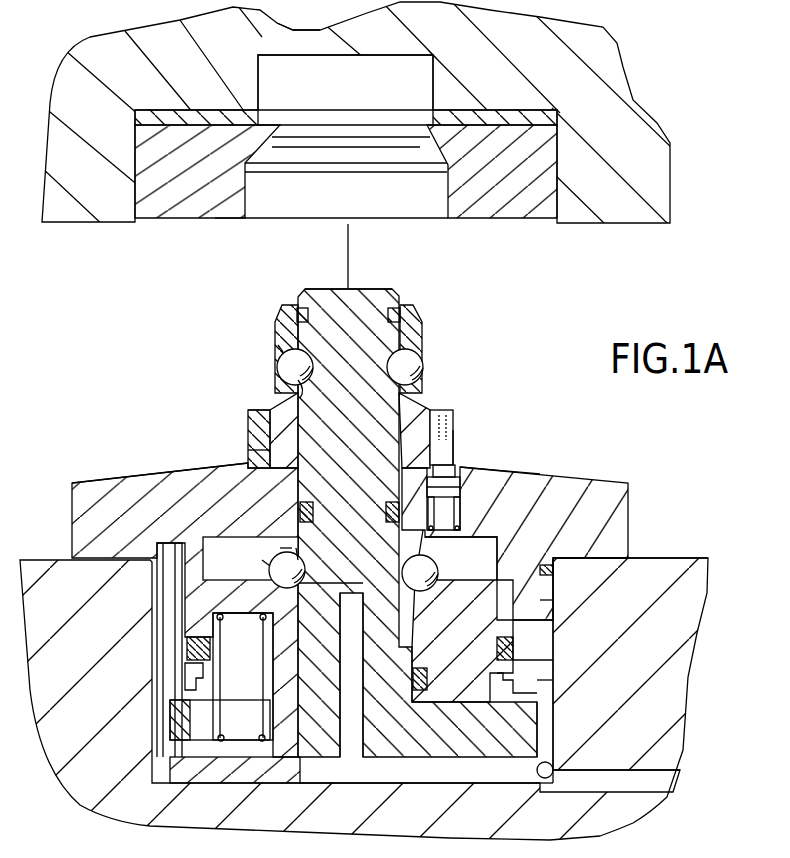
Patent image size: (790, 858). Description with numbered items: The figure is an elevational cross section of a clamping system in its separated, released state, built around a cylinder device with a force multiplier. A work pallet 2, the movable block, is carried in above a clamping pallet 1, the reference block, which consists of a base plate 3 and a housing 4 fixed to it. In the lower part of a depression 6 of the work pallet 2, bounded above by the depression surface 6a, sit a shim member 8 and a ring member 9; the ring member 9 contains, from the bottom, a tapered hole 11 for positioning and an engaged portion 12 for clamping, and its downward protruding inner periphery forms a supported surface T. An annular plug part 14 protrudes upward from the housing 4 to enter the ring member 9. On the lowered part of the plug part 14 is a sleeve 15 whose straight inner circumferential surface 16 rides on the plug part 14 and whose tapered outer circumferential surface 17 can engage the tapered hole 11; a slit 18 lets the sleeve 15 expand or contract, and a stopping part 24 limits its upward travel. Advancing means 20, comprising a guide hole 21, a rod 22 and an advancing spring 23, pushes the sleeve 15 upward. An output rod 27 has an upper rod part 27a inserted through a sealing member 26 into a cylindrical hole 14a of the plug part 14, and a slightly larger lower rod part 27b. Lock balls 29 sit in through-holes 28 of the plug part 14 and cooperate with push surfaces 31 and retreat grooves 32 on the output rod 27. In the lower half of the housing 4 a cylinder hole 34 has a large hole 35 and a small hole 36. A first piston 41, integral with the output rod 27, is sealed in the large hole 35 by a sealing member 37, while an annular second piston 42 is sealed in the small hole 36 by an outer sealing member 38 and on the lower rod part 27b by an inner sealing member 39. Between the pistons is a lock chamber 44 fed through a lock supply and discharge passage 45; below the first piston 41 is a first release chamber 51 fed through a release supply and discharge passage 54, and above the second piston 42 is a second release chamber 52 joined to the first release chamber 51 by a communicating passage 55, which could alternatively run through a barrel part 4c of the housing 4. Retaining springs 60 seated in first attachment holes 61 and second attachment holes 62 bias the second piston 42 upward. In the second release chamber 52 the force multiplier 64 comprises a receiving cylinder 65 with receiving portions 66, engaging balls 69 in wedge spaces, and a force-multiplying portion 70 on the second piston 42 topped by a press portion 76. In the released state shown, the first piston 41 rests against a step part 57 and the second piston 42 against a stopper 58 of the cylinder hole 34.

The clamping pallet 1 is at (686, 564).
The work pallet 2 is at (618, 72).
The base plate 3 is at (687, 697).
The housing 4 is at (640, 505).
The barrel part 4c is at (590, 665).
The depression 6 is at (392, 58).
The recess top surface 6a is at (315, 45).
The shim member 8 is at (219, 117).
The ring member 9 is at (162, 207).
The tapered hole 11 is at (247, 216).
The engaged portion 12 is at (283, 123).
The supported surface T is at (217, 228).
The plug part 14 is at (432, 338).
The cylindrical hole 14a is at (432, 406).
The sleeve 15 is at (238, 436).
The straight inner circumferential surface 16 is at (249, 452).
The tapered outer circumferential surface 17 is at (258, 411).
The slit 18 is at (455, 441).
The advancing means 20 is at (533, 474).
The guide hole 21 is at (458, 520).
The rod 22 is at (470, 466).
The advancing spring 23 is at (478, 546).
The stopping part 24 is at (465, 432).
The sealing member 26 is at (298, 508).
The output rod 27 is at (384, 286).
The upper rod part 27a is at (318, 289).
The lower rod part 27b is at (355, 758).
The through-hole 28 is at (279, 352).
The lock ball 29 is at (283, 368).
The push surface 31 is at (296, 312).
The retreat groove 32 is at (318, 388).
The cylinder hole 34 is at (547, 660).
The large hole 35 is at (548, 735).
The small hole 36 is at (549, 601).
The sealing member 37 is at (553, 706).
The outer sealing member 38 is at (553, 638).
The inner sealing member 39 is at (414, 678).
The first piston 41 is at (441, 753).
The second piston 42 is at (553, 617).
The lock chamber 44 is at (553, 680).
The lock supply and discharge passage 45 is at (165, 626).
The first release chamber 51 is at (495, 770).
The second release chamber 52 is at (553, 573).
The release supply and discharge passage 54 is at (625, 791).
The communicating passage 55 is at (390, 776).
The step part 57 is at (180, 690).
The stopper 58 is at (183, 650).
The retaining spring 60 is at (220, 760).
The first attachment hole 61 is at (225, 722).
The second attachment hole 62 is at (224, 668).
The force multiplier 64 is at (255, 565).
The receiving cylinder 65 is at (280, 548).
The receiving portion 66 is at (296, 548).
The engaging ball 69 is at (268, 574).
The force-multiplying portion 70 is at (256, 638).
The press portion 76 is at (249, 652).